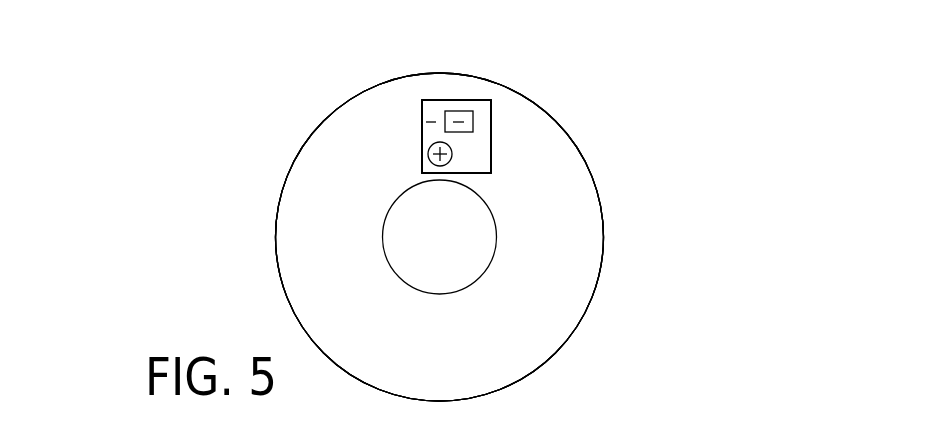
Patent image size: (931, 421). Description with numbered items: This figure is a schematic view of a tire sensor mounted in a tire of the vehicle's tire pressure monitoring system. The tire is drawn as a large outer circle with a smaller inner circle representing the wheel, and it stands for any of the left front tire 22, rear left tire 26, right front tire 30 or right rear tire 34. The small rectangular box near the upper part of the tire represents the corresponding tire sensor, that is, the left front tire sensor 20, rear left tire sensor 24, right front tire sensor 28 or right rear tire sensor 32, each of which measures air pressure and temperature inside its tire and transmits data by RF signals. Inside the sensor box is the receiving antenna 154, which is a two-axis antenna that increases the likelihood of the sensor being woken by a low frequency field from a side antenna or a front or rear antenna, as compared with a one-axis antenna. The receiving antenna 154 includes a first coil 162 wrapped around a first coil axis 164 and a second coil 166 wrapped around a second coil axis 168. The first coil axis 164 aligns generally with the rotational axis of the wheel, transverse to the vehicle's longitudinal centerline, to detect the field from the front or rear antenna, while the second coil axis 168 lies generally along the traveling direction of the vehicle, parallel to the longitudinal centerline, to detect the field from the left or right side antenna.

The left front tire sensor 20 is at (408, 115).
The rear left tire sensor 24 is at (456, 136).
The right front tire sensor 28 is at (456, 136).
The right rear tire sensor 32 is at (456, 136).
The left front tire 22 is at (278, 183).
The rear left tire 26 is at (440, 237).
The right front tire 30 is at (440, 237).
The right rear tire 34 is at (440, 237).
The receiving antenna 154 is at (432, 111).
The first coil 162 is at (426, 150).
The first coil axis 164 is at (452, 157).
The second coil 166 is at (460, 108).
The second coil axis 168 is at (480, 125).